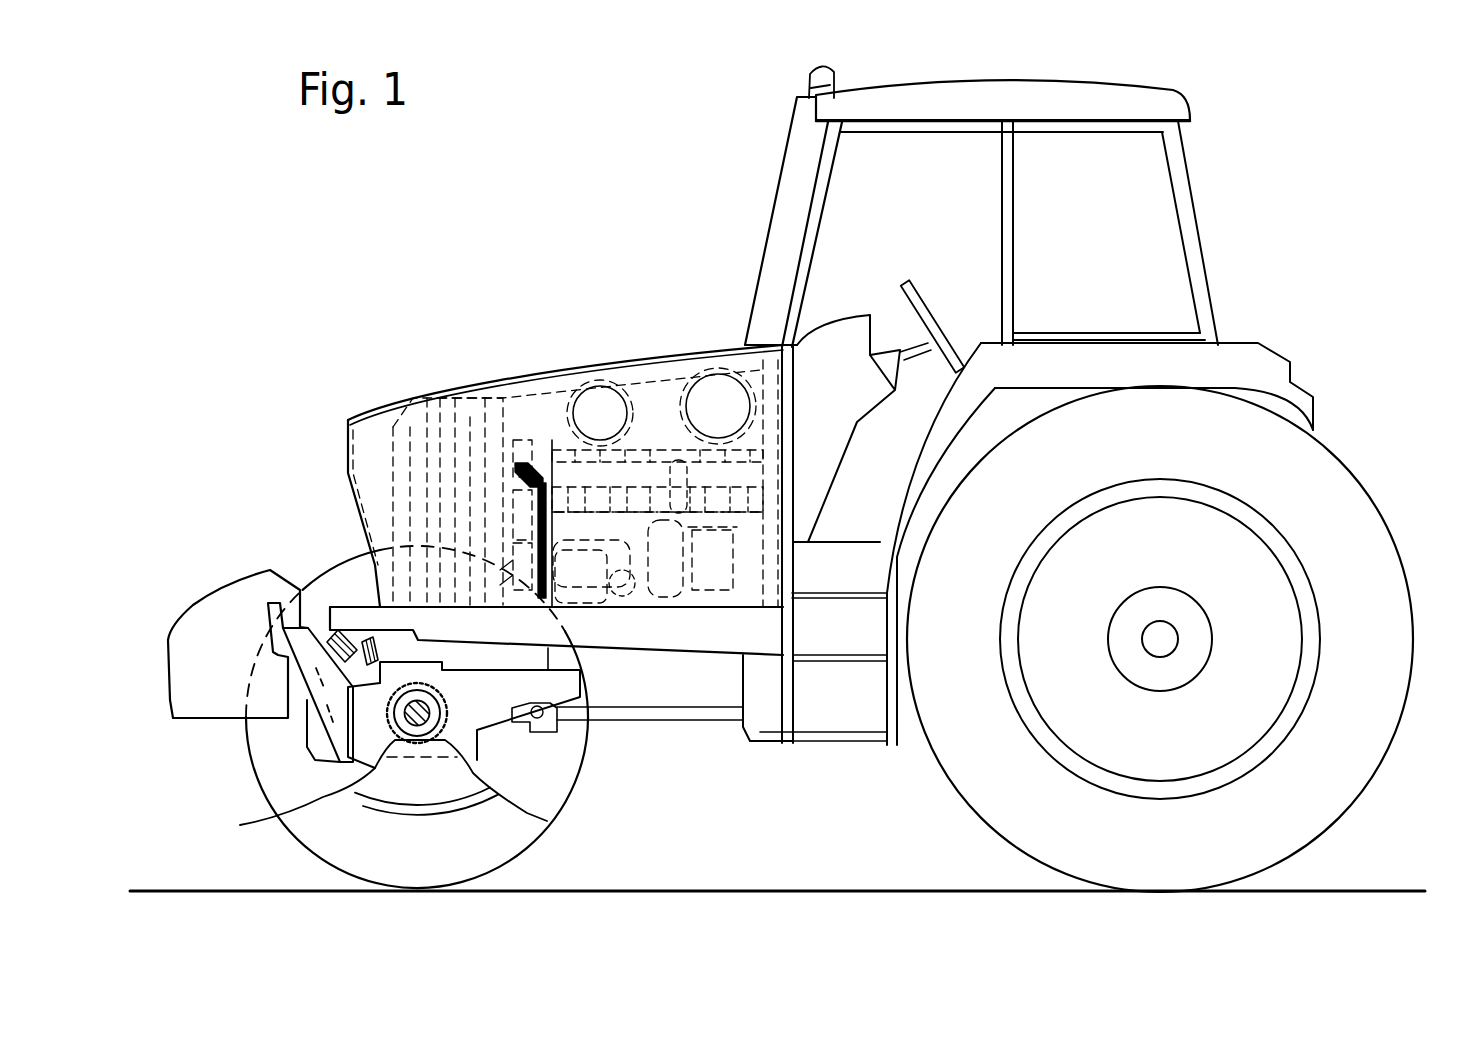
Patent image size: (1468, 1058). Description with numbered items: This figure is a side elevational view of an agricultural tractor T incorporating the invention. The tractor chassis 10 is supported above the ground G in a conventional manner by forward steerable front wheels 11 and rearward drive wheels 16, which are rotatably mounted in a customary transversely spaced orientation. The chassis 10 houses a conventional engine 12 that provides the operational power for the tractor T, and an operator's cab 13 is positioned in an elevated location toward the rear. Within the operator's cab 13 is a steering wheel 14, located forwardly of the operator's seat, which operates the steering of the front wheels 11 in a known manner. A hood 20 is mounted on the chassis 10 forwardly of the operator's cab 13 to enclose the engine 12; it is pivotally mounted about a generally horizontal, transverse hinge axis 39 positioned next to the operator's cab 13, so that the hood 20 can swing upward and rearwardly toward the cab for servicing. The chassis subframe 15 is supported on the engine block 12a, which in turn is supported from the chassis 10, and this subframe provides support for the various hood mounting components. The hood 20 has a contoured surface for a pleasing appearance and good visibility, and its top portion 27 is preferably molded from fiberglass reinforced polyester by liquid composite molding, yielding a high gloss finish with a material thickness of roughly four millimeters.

The chassis 10 is at (670, 632).
The front wheels 11 is at (258, 824).
The engine 12 is at (520, 467).
The engine block 12a is at (572, 529).
The operator's cab 13 is at (1205, 247).
The steering wheel 14 is at (912, 279).
The chassis subframe 15 is at (558, 428).
The rear drive wheels 16 is at (1365, 513).
The hood 20 is at (348, 423).
The top portion 27 is at (578, 358).
The hinge axis 39 is at (764, 345).
The tractor T is at (1292, 133).
The ground G is at (1388, 891).